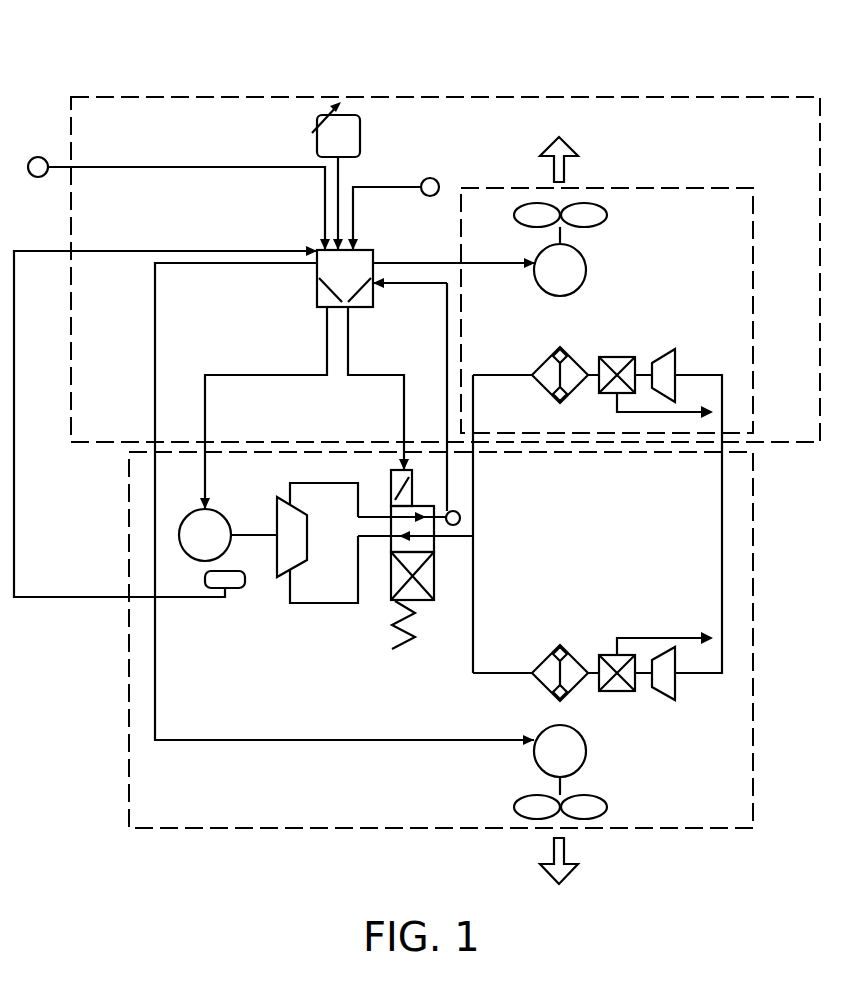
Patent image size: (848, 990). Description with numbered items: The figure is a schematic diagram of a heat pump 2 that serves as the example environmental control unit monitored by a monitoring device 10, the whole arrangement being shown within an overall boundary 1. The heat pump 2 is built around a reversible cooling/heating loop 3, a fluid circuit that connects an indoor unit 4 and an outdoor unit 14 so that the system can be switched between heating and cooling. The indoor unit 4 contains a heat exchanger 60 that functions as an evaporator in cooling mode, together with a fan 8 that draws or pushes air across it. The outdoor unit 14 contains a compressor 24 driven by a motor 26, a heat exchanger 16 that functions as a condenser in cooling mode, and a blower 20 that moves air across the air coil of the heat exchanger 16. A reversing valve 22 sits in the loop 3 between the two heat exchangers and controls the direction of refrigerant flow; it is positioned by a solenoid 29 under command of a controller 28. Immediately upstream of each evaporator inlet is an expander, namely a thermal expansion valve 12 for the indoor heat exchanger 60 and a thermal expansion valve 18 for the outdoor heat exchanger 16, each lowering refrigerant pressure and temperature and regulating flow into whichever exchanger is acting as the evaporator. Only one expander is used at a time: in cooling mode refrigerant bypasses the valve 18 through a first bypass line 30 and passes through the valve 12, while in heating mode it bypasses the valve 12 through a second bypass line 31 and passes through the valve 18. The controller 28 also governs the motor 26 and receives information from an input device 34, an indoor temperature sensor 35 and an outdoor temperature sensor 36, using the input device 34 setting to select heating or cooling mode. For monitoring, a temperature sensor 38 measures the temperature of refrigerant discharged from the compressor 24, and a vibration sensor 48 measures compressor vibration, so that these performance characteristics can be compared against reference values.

The vehicle / overall system 1 is at (445, 230).
The heat pump 2 is at (445, 230).
The monitoring device 10 is at (145, 80).
The reversible cooling/heating loop 3 is at (471, 640).
The outdoor unit 14 is at (753, 585).
The indoor unit 4 is at (753, 212).
The fan 8 is at (586, 258).
The thermal expansion valve 12 is at (672, 351).
The evaporating heat exchanger 16 is at (574, 657).
The thermal expansion valve 18 is at (663, 701).
The blower 20 is at (588, 752).
The reversing valve 22 is at (402, 552).
The compressor 24 is at (277, 515).
The motor 26 is at (182, 522).
The controller 28 is at (328, 265).
The solenoid 29 is at (408, 497).
The first bypass line 30 is at (663, 637).
The second bypass line 31 is at (660, 414).
The input device 34 is at (349, 113).
The indoor temperature sensor 35 is at (430, 178).
The outdoor temperature sensor 36 is at (38, 157).
The temperature sensor 38 is at (461, 514).
The vibration sensor 48 is at (228, 590).
The condensing heat exchanger 60 is at (572, 357).